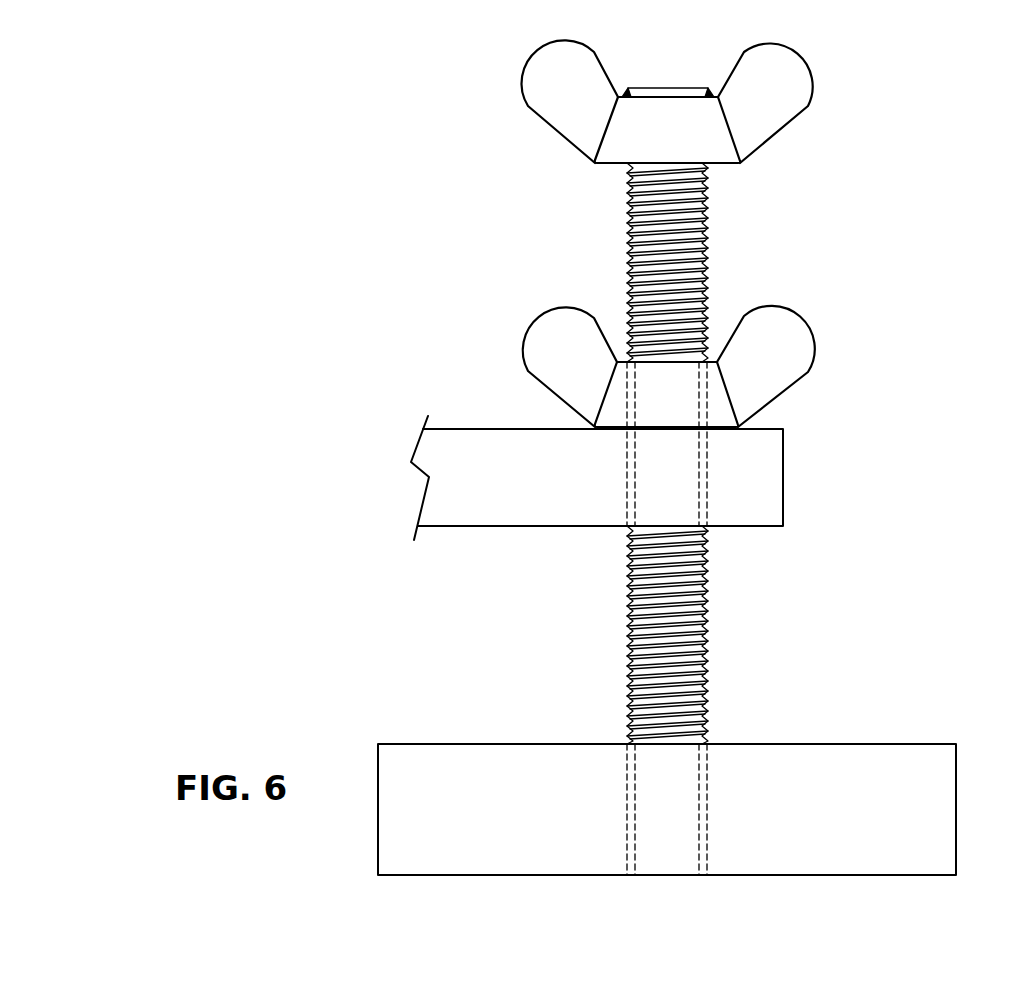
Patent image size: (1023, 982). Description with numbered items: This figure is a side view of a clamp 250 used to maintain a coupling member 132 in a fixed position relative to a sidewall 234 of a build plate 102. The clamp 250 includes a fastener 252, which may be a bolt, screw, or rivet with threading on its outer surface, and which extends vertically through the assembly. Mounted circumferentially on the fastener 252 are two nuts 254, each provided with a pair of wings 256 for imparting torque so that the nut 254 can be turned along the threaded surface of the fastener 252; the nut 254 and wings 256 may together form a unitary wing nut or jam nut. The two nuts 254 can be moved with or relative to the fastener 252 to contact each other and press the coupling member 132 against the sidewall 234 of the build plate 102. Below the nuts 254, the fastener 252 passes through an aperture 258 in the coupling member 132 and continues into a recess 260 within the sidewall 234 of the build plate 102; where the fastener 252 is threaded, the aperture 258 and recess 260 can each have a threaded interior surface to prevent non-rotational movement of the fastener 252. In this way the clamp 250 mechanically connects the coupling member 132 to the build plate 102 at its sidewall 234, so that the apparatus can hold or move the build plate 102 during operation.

The build plate 102 is at (699, 761).
The coupling member 132 is at (503, 490).
The sidewall 234 is at (512, 743).
The clamp 250 is at (428, 201).
The fastener 252 is at (660, 253).
The nut 254 is at (655, 88).
The wings 256 is at (772, 88).
The aperture 258 is at (678, 472).
The recess 260 is at (682, 778).